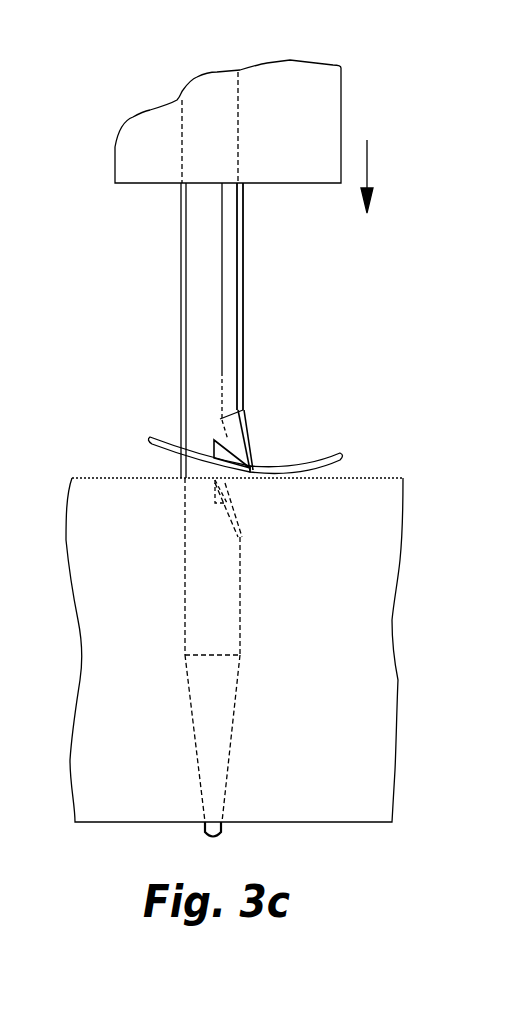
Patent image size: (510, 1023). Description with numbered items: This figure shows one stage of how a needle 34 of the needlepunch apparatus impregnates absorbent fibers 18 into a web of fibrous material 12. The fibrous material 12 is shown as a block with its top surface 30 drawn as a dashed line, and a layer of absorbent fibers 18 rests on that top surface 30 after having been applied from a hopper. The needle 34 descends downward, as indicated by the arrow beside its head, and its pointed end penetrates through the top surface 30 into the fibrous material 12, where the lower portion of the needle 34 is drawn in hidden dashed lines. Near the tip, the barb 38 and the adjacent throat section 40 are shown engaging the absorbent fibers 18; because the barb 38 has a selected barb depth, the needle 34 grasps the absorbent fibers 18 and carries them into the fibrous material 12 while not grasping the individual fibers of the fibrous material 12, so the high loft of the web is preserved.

The fibrous material 12 is at (104, 460).
The absorbent fibers 18 is at (160, 438).
The top surface 30 is at (368, 477).
The needle 34 is at (163, 283).
The barb 38 is at (252, 437).
The throat section 40 is at (227, 485).